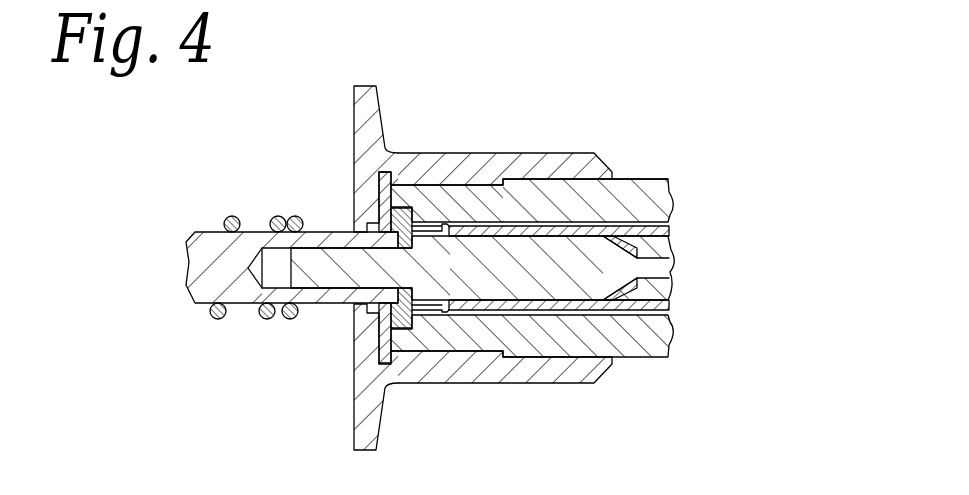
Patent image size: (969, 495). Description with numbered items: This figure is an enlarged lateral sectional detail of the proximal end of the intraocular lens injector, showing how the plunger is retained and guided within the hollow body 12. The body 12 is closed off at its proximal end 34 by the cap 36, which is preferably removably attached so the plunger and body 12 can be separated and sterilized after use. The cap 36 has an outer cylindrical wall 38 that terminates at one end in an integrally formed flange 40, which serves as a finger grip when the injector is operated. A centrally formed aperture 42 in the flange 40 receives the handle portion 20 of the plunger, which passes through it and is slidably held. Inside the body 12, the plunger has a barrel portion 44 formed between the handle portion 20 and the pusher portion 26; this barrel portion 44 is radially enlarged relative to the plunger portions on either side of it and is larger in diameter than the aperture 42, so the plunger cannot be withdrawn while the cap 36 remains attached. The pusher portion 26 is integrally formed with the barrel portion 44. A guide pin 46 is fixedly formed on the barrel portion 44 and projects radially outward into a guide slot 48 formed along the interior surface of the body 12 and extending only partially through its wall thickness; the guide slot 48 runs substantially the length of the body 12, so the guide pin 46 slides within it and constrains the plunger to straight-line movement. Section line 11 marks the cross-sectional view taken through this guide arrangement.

The section line 11- 11 is at (485, 83).
The body 12 is at (638, 178).
The handle portion 20 is at (217, 257).
The pusher portion 26 is at (665, 263).
The proximal end 34 is at (389, 344).
The cap 36 is at (597, 158).
The outer cylindrical wall 38 is at (540, 153).
The flange 40 is at (353, 93).
The aperture 42 is at (353, 226).
The barrel portion 44 is at (603, 304).
The guide pin 46 is at (441, 226).
The guide slot 48 is at (665, 226).